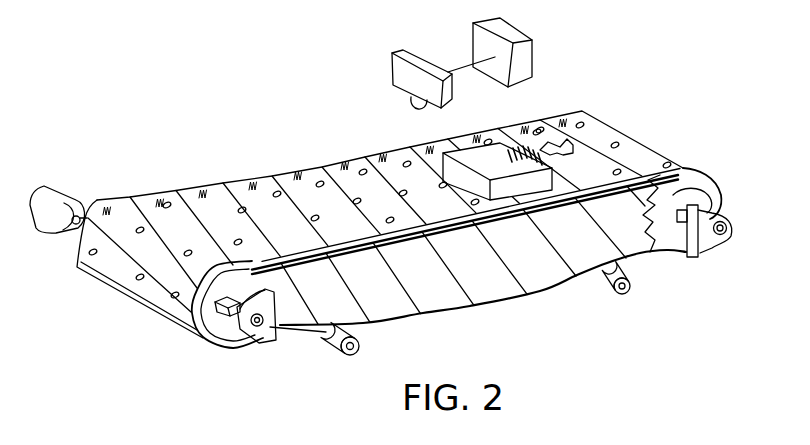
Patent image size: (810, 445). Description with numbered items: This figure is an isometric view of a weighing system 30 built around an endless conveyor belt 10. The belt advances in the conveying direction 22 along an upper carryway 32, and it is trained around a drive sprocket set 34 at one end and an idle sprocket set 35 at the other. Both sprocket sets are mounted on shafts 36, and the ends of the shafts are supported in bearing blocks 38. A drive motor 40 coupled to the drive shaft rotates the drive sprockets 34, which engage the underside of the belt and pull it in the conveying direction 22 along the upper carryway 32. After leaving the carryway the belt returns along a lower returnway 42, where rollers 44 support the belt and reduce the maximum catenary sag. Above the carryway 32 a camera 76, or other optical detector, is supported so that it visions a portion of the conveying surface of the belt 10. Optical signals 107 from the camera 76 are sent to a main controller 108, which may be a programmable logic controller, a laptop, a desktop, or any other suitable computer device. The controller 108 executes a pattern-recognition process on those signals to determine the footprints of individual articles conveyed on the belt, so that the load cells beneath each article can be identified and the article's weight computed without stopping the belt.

The conveyor belt 10 is at (643, 153).
The conveying direction 22 is at (570, 128).
The weighing system 30 is at (204, 64).
The upper carryway 32 is at (445, 233).
The drive sprocket set 34 is at (222, 350).
The idle sprocket set 35 is at (667, 240).
The shafts 36 is at (710, 188).
The bearing blocks 38 is at (273, 352).
The drive motor 40 is at (53, 197).
The lower returnway 42 is at (488, 312).
The rollers 44 is at (328, 345).
The camera 76 is at (390, 73).
The optical signals 107 is at (448, 72).
The main controller 108 is at (512, 32).